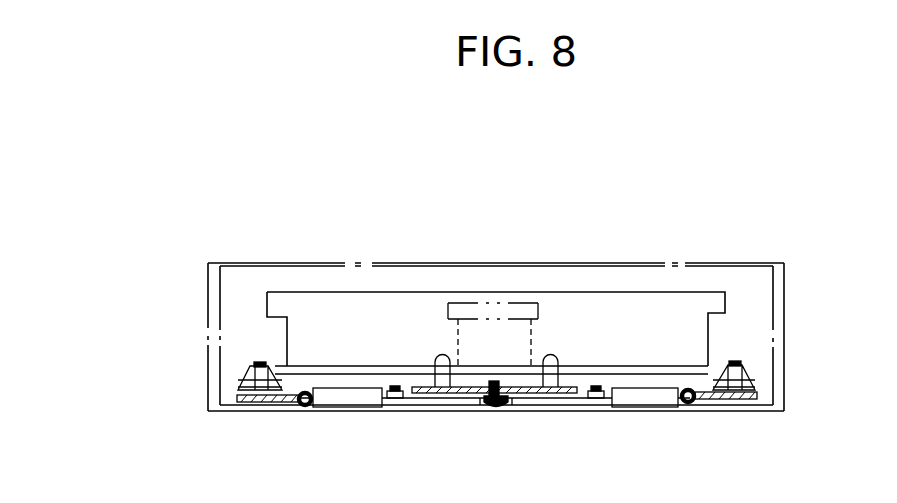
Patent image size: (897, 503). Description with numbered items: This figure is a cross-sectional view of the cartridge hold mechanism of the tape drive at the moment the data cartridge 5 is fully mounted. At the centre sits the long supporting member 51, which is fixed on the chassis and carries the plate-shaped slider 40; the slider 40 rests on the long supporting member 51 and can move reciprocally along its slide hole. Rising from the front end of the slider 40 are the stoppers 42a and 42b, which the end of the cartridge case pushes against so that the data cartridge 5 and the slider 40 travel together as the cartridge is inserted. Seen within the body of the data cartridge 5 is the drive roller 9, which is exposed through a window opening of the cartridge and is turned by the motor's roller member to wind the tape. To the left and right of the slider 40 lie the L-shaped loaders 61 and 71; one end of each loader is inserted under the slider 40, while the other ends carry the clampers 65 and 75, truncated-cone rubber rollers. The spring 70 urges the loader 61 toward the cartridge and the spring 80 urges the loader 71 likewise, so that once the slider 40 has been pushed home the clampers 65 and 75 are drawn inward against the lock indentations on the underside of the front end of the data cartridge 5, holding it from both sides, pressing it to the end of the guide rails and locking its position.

The data cartridge 5 is at (398, 292).
The drive roller 9 is at (530, 303).
The slider 40 is at (573, 386).
The stopper 42a is at (438, 356).
The stopper 42b is at (551, 356).
The clamper 65 is at (243, 380).
The clamper 75 is at (748, 378).
The L-shaped loader 61 is at (298, 402).
The L-shaped loader 71 is at (712, 401).
The spring 70 is at (355, 390).
The spring 80 is at (643, 396).
The long supporting member 51 is at (509, 404).